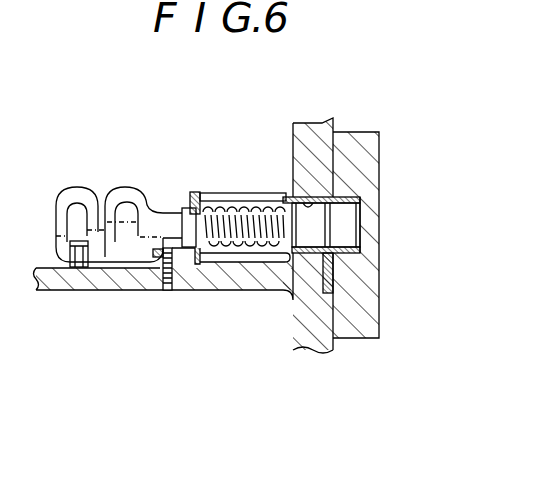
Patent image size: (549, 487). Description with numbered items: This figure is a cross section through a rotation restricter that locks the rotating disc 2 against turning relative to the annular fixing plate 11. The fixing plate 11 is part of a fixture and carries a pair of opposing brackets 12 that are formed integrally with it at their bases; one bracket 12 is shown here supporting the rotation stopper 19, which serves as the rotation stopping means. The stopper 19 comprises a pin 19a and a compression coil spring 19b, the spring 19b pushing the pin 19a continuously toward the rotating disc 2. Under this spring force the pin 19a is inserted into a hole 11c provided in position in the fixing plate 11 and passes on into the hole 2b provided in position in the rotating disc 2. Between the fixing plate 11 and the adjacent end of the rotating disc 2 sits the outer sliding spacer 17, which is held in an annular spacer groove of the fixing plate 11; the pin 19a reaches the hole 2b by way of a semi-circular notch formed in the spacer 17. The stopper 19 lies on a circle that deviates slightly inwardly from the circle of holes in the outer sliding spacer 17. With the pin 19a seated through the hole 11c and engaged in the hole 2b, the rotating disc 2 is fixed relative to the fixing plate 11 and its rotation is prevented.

The rotating disc 2 is at (381, 161).
The hole 2b is at (362, 232).
The annular fixing plate 11 is at (287, 313).
The hole 11c is at (290, 197).
The bracket 12 is at (108, 290).
The outer sliding spacer 17 is at (340, 277).
The rotation stopper 19 is at (118, 183).
The pin 19a is at (232, 265).
The compression coil spring 19b is at (221, 194).